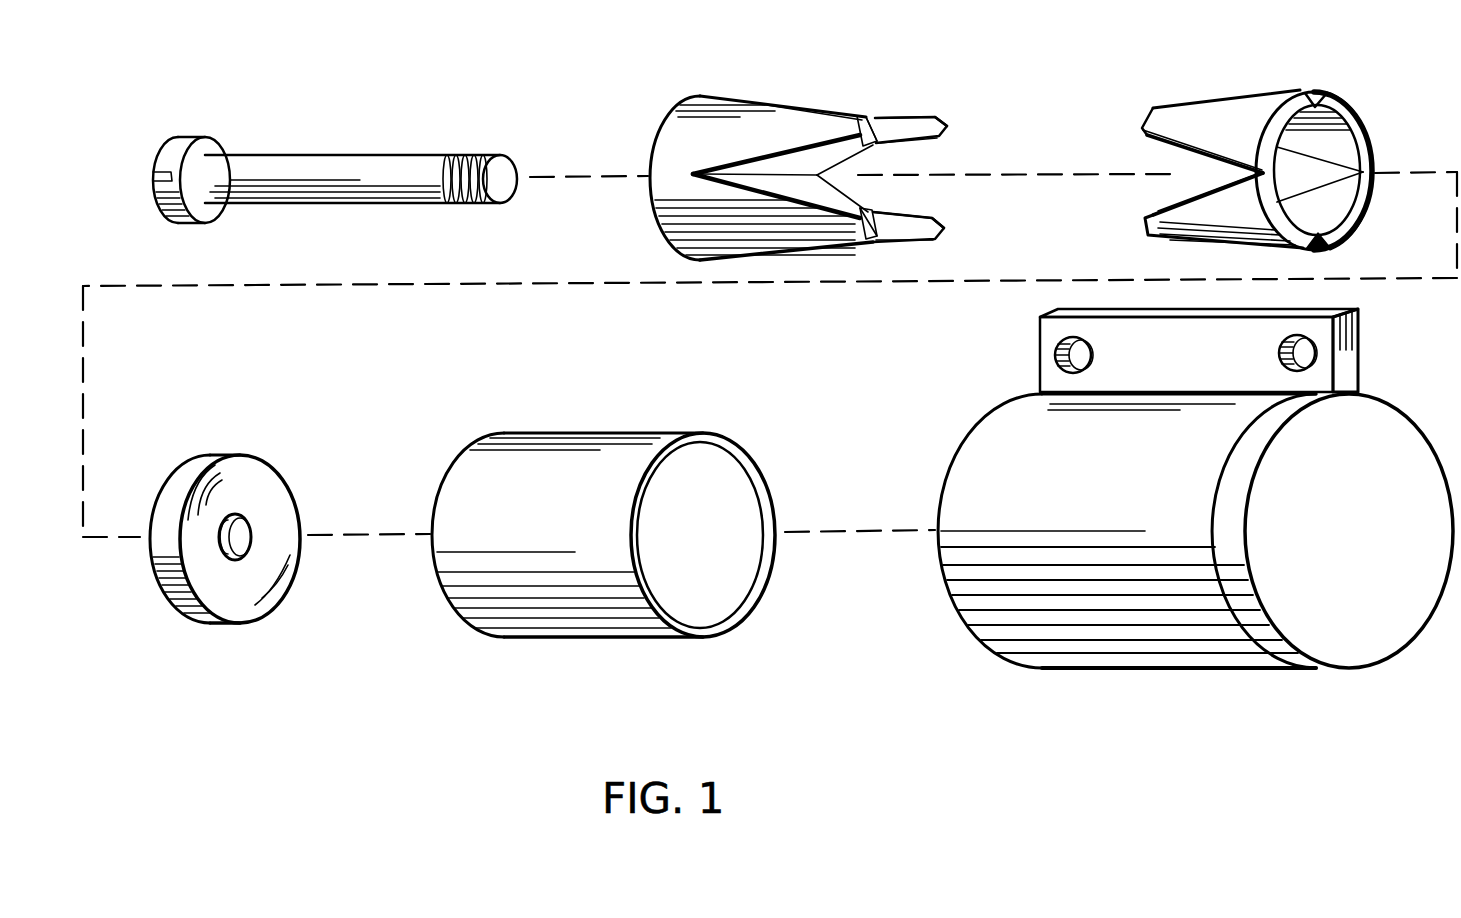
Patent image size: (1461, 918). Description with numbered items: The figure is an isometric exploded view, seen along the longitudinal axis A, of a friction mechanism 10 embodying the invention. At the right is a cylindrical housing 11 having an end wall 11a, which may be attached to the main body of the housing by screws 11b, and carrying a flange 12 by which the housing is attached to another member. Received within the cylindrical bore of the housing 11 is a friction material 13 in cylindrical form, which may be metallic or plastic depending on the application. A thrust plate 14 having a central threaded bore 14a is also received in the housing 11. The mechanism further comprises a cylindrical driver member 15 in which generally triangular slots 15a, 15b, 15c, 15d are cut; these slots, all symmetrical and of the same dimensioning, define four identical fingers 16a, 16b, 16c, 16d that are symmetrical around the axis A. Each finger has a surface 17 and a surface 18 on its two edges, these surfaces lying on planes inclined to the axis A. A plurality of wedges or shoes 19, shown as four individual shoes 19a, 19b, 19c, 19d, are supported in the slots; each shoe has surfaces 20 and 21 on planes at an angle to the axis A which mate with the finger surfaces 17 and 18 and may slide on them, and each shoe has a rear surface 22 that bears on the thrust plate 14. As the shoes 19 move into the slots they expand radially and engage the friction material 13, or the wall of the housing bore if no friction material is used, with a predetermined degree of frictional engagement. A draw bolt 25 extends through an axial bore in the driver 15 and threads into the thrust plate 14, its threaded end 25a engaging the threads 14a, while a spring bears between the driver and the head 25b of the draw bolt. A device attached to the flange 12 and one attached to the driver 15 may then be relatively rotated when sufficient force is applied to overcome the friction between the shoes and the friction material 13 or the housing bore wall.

The mechanism 10 is at (624, 665).
The cylindrical housing 11 is at (1195, 511).
The end wall 11a is at (1415, 617).
The screws 11b is at (1285, 553).
The flange 12 is at (1360, 347).
The friction material 13 is at (620, 432).
The thrust plate 14 is at (257, 538).
The central threaded bore 14a is at (247, 523).
The driver member 15 is at (834, 174).
The slot 15a is at (843, 99).
The slot 15b is at (910, 155).
The slot 15c is at (888, 248).
The slot 15d is at (801, 185).
The finger 16a is at (938, 124).
The finger 16b is at (897, 200).
The finger 16c is at (780, 230).
The finger 16d is at (737, 112).
The surface 17 is at (872, 130).
The surface 18 is at (923, 115).
The shoes 19 is at (1259, 152).
The shoe 19a is at (1183, 117).
The shoe 19b is at (1327, 95).
The shoe 19c is at (1340, 203).
The shoe 19d is at (1145, 222).
The surface 20 is at (1313, 97).
The surface 21 is at (1155, 213).
The rear surface 22 is at (940, 131).
The draw bolt 25 is at (335, 130).
The threaded end 25a is at (455, 158).
The head 25b is at (180, 138).
The axis A is at (483, 285).